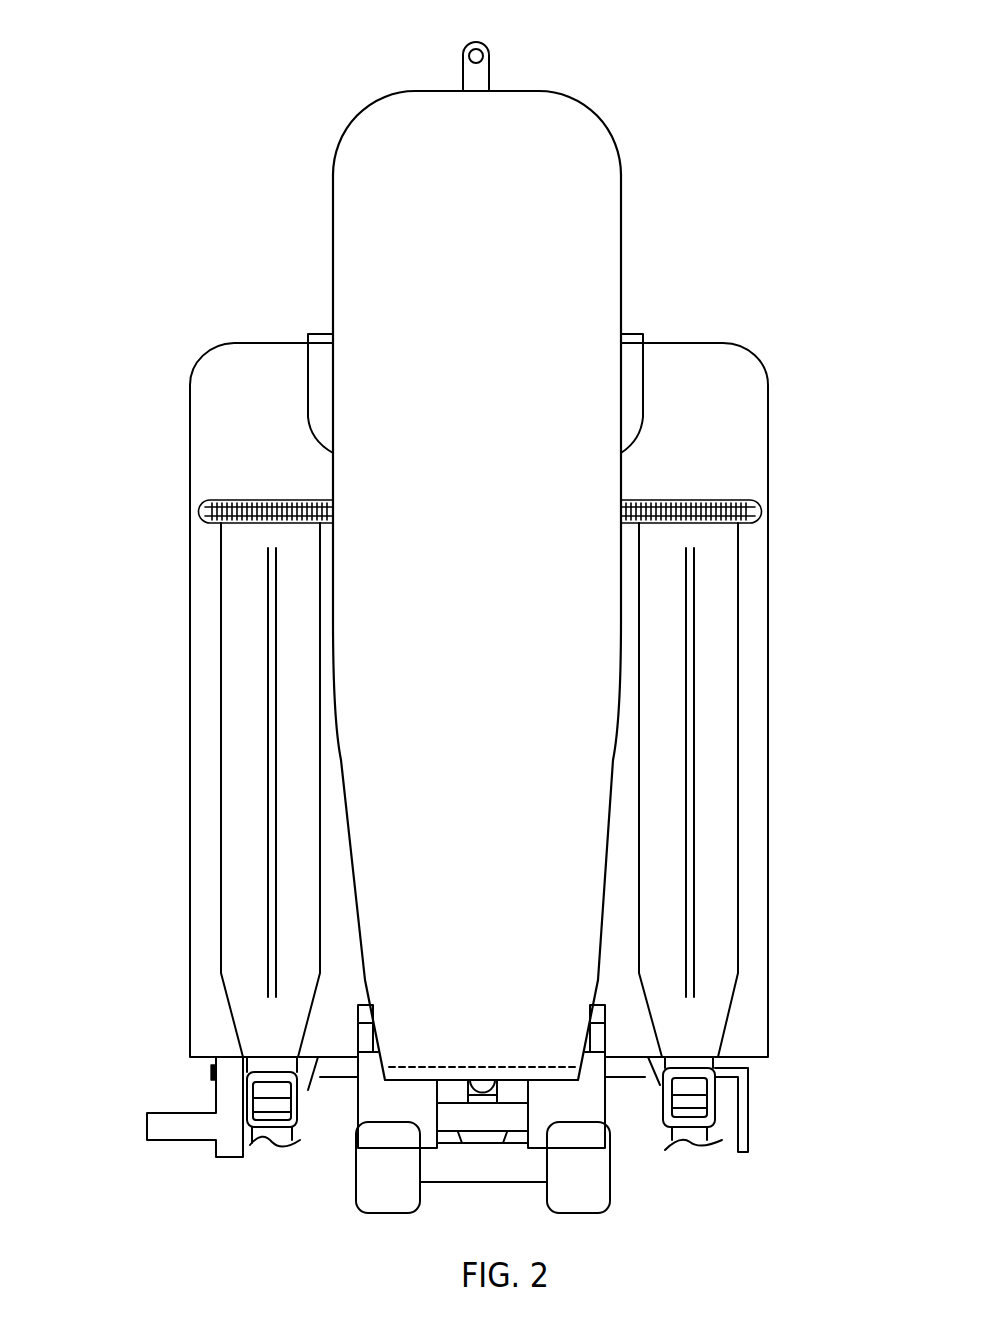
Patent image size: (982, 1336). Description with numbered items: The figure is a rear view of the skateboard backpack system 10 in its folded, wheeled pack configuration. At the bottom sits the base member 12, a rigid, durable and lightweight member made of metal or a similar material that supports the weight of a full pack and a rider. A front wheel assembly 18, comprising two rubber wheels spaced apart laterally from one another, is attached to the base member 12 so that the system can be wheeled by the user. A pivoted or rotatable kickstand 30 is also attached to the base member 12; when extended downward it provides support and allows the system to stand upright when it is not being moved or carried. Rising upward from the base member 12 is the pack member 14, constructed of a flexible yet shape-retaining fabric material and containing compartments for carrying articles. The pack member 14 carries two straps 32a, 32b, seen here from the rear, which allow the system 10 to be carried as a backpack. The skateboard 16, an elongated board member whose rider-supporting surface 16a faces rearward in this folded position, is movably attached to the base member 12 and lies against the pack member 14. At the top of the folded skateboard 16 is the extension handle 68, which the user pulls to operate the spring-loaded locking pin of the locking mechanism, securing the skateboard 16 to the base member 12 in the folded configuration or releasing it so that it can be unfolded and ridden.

The skateboard backpack system 10 is at (158, 62).
The base member 12 is at (387, 1125).
The pack member 14 is at (222, 407).
The skateboard 16 is at (618, 150).
The rider-supporting surface 16a is at (585, 232).
The front wheel assembly 18 is at (613, 1207).
The kickstand 30 is at (150, 1140).
The strap 32a is at (716, 568).
The strap 32b is at (238, 656).
The extension handle 68 is at (492, 66).